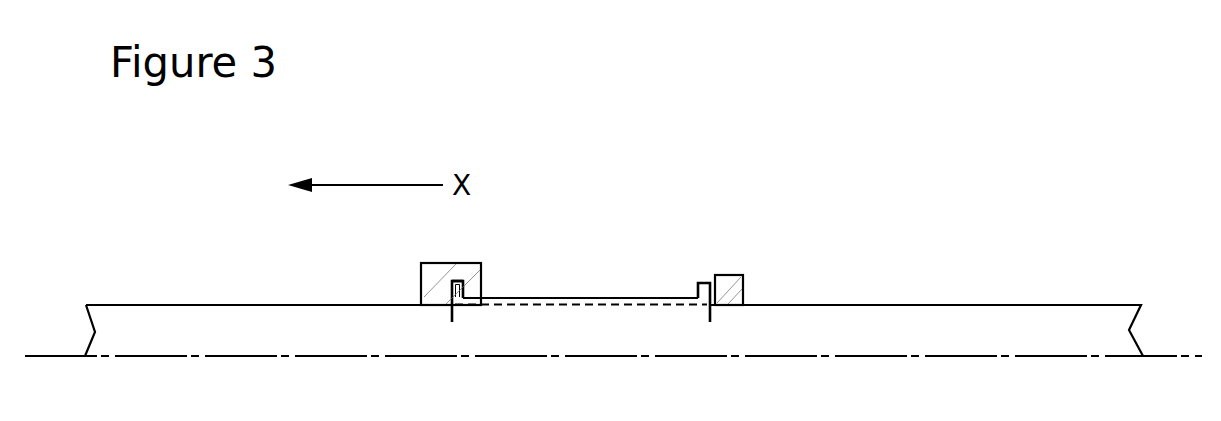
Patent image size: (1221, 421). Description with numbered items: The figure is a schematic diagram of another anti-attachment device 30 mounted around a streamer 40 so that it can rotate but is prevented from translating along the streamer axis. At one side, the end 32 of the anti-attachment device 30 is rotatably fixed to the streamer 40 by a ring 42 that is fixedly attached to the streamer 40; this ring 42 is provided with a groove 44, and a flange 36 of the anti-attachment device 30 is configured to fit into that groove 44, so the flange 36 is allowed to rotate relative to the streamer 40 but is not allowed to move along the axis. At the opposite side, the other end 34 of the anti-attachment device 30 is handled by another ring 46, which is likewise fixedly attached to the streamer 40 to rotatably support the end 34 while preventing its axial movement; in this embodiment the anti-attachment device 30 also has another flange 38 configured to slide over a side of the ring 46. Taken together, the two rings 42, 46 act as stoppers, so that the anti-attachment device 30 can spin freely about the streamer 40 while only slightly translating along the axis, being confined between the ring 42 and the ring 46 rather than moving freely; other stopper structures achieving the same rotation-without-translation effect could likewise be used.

The anti-attachment device 30 is at (592, 297).
The end 32 is at (492, 291).
The other end 34 is at (678, 292).
The flange 36 is at (455, 288).
The another flange 38 is at (702, 283).
The streamer 40 is at (875, 305).
The ring 42 is at (468, 275).
The groove 44 is at (458, 286).
The another ring 46 is at (732, 284).